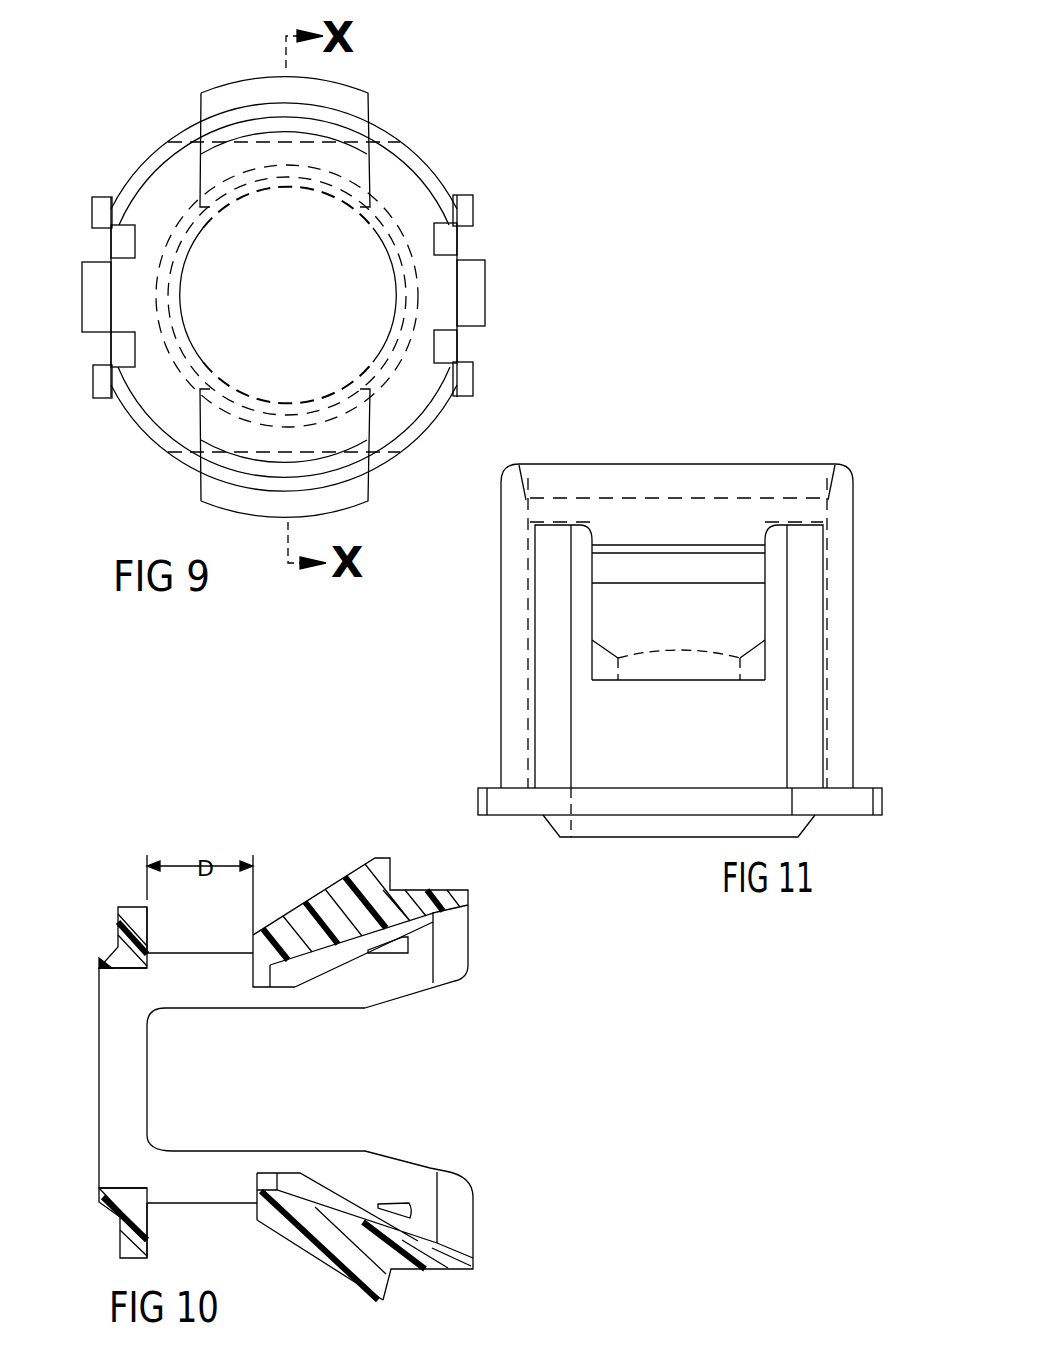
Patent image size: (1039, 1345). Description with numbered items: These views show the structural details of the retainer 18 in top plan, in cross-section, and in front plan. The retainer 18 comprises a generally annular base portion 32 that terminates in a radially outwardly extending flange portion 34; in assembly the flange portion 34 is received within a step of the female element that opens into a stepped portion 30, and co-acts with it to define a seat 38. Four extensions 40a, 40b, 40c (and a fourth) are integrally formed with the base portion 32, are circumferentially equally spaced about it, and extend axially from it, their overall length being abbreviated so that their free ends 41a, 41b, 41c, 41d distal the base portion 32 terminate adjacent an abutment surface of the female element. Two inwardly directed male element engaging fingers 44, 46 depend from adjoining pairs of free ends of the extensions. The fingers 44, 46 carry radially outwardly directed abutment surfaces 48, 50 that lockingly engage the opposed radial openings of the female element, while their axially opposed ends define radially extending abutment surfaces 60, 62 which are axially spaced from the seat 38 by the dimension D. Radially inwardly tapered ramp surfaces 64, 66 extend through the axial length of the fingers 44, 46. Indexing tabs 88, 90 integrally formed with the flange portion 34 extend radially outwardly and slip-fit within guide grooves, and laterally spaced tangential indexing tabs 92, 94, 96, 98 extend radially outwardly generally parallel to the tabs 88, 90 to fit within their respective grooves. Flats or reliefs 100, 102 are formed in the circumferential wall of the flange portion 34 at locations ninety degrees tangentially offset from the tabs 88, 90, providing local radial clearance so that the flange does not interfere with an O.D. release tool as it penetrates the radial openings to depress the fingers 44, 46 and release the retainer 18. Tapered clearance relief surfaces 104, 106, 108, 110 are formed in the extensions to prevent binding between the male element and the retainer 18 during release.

In FIG. 9, the retainer 18 is at (152, 137).
In FIG. 11, the retainer 18 is at (662, 629).
In FIG. 10, the retainer 18 is at (306, 1064).
In FIG. 11, the stepped portion 30 is at (496, 772).
In FIG. 11, the base portion 32 is at (838, 805).
In FIG. 10, the base portion 32 is at (115, 990).
In FIG. 10, the flange portion 34 is at (127, 938).
In FIG. 10, the seat 38 is at (150, 1222).
In FIG. 10, the extension 40a is at (355, 997).
In FIG. 11, the extension 40b is at (832, 680).
In FIG. 10, the extension 40b is at (330, 1163).
In FIG. 11, the extension 40c is at (520, 632).
In FIG. 9, the free end 41a is at (448, 206).
In FIG. 10, the free end 41a is at (462, 968).
In FIG. 9, the free end 41b is at (446, 380).
In FIG. 11, the free end 41b is at (840, 463).
In FIG. 10, the free end 41b is at (465, 1205).
In FIG. 9, the free end 41c is at (124, 384).
In FIG. 11, the free end 41c is at (515, 463).
In FIG. 9, the free end 41d is at (118, 212).
In FIG. 9, the male element engaging finger 44 is at (350, 100).
In FIG. 10, the male element engaging finger 44 is at (318, 893).
In FIG. 11, the male element engaging finger 46 is at (677, 633).
In FIG. 10, the male element engaging finger 46 is at (310, 1252).
In FIG. 9, the abutment surface 48 is at (240, 90).
In FIG. 10, the abutment surface 48 is at (389, 866).
In FIG. 9, the abutment surface 50 is at (358, 490).
In FIG. 11, the abutment surface 50 is at (630, 540).
In FIG. 10, the abutment surface 50 is at (396, 1277).
In FIG. 10, the abutment surface 60 is at (250, 947).
In FIG. 10, the abutment surface 62 is at (256, 1215).
In FIG. 9, the ramp surface 64 is at (318, 155).
In FIG. 10, the ramp surface 64 is at (323, 978).
In FIG. 9, the ramp surface 66 is at (238, 425).
In FIG. 10, the ramp surface 66 is at (358, 1195).
In FIG. 9, the indexing tab 88 is at (472, 296).
In FIG. 11, the indexing tab 88 is at (878, 795).
In FIG. 9, the indexing tab 90 is at (95, 296).
In FIG. 11, the indexing tab 90 is at (483, 795).
In FIG. 9, the tangential indexing tab 92 is at (466, 211).
In FIG. 9, the tangential indexing tab 94 is at (100, 212).
In FIG. 9, the tangential indexing tab 96 is at (462, 380).
In FIG. 11, the tangential indexing tab 96 is at (858, 810).
In FIG. 9, the tangential indexing tab 98 is at (100, 380).
In FIG. 11, the tangential indexing tab 98 is at (495, 805).
In FIG. 9, the flat 100 is at (380, 140).
In FIG. 10, the flat 100 is at (125, 905).
In FIG. 9, the flat 102 is at (186, 455).
In FIG. 11, the flat 102 is at (657, 800).
In FIG. 10, the flat 102 is at (125, 1255).
In FIG. 9, the tapered clearance relief surface 104 is at (447, 240).
In FIG. 10, the tapered clearance relief surface 104 is at (413, 997).
In FIG. 9, the tapered clearance relief surface 106 is at (448, 346).
In FIG. 10, the tapered clearance relief surface 106 is at (420, 1165).
In FIG. 9, the tapered clearance relief surface 108 is at (122, 240).
In FIG. 9, the tapered clearance relief surface 110 is at (122, 347).